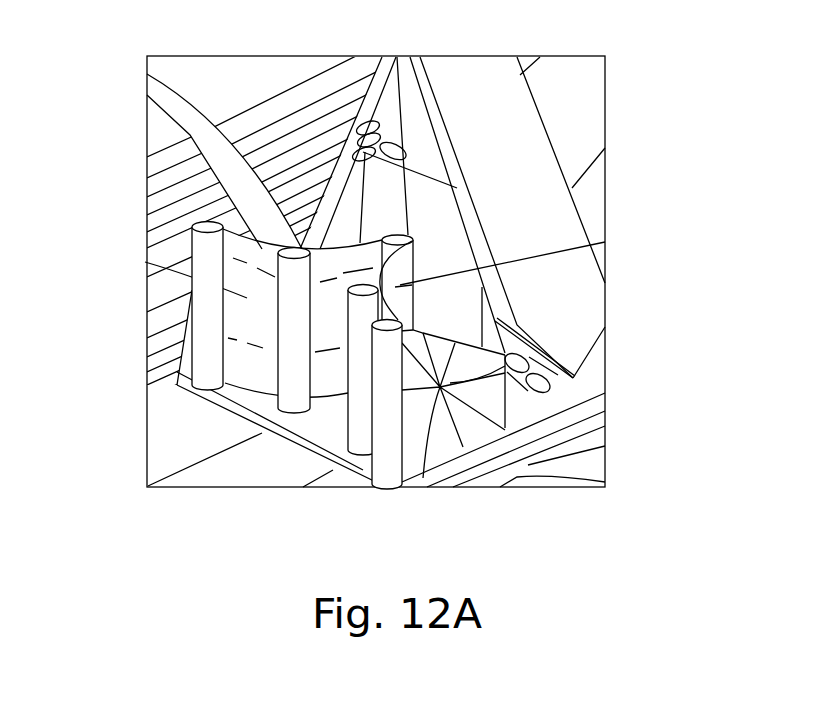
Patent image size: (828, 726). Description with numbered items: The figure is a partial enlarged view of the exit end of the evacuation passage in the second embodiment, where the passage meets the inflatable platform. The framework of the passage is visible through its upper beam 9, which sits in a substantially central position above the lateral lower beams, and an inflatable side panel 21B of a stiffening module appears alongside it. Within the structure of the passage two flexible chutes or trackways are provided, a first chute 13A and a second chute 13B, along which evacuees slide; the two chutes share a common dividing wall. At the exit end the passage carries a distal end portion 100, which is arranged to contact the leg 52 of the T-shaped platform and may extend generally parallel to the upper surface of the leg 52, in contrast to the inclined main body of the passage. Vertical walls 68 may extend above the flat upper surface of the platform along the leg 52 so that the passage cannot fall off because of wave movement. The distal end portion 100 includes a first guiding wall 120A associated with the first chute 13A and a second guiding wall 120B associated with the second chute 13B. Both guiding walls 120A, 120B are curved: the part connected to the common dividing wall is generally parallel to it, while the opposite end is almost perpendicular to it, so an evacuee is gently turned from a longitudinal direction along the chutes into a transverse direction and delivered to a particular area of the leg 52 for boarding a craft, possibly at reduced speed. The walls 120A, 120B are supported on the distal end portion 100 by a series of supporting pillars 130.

The upper beam 9 is at (382, 107).
The first chute 13A is at (393, 186).
The second chute 13B is at (440, 222).
The inflatable side panel 21B is at (578, 313).
The leg 52 is at (262, 476).
The vertical wall 68 is at (158, 378).
The distal end portion 100 is at (323, 435).
The first guiding wall 120A is at (246, 296).
The second guiding wall 120B is at (398, 286).
The supporting pillars 130 is at (293, 403).